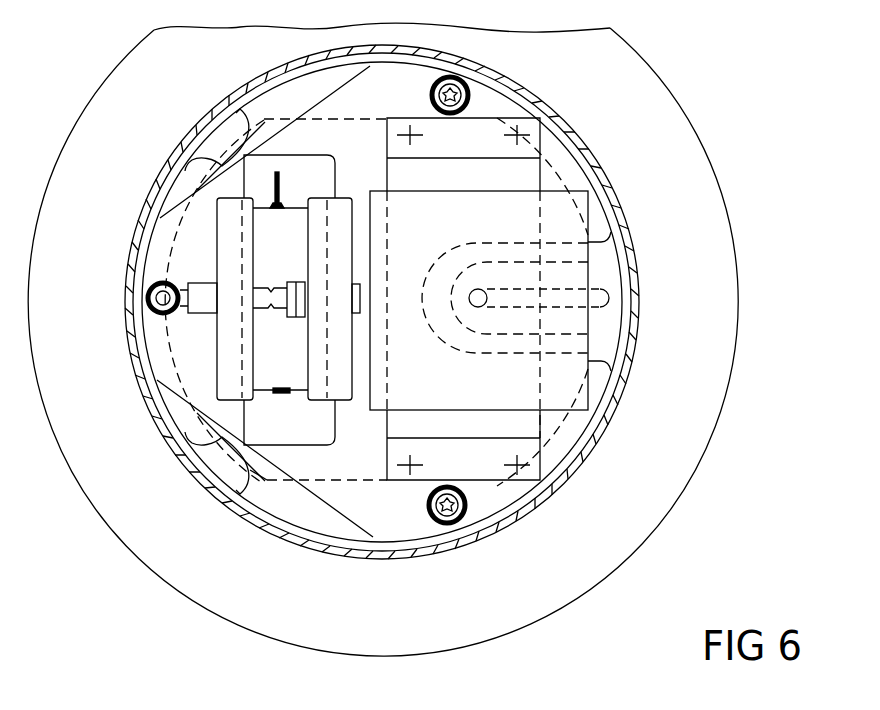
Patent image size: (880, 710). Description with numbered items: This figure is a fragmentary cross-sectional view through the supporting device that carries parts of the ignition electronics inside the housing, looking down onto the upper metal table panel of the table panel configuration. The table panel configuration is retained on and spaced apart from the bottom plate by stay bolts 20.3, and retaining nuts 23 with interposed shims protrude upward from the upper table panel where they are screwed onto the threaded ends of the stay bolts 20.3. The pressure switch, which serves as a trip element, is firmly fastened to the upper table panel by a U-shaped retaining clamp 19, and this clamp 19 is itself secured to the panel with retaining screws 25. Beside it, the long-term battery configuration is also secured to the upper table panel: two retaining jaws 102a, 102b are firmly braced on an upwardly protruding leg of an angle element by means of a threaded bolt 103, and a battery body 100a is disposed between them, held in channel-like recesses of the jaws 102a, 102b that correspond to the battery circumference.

The U-retaining clamp 19 is at (503, 423).
The stay bolts 20.3 is at (452, 545).
The retaining nuts 23 is at (466, 78).
The retaining screws 25 is at (422, 137).
The battery body 100a is at (289, 300).
The retaining jaw 102a is at (333, 227).
The retaining jaw 102b is at (227, 262).
The threaded bolt 103 is at (272, 312).